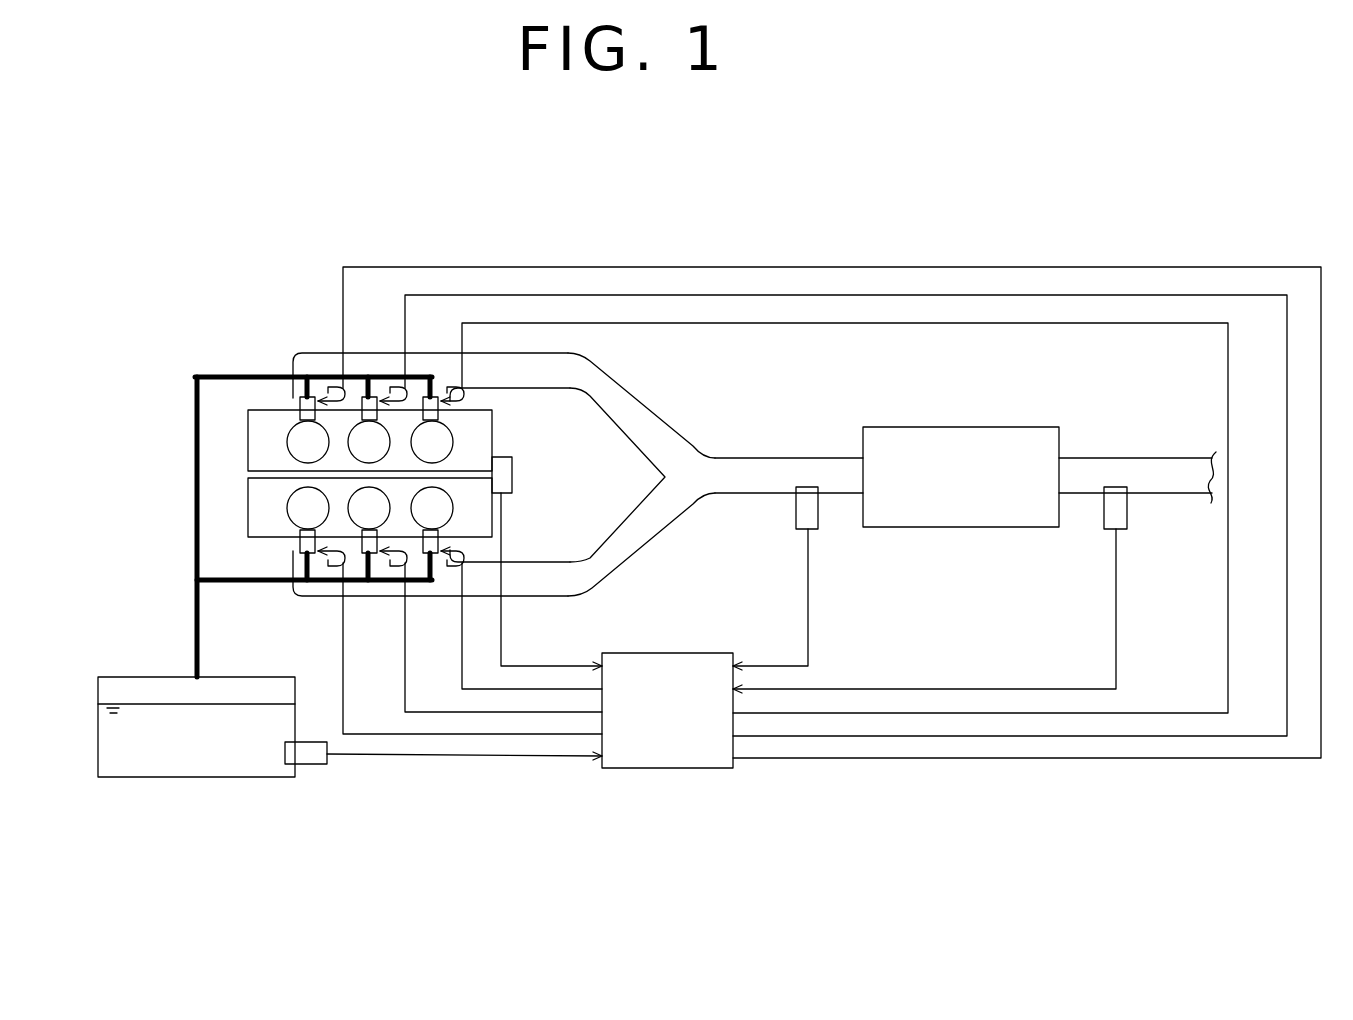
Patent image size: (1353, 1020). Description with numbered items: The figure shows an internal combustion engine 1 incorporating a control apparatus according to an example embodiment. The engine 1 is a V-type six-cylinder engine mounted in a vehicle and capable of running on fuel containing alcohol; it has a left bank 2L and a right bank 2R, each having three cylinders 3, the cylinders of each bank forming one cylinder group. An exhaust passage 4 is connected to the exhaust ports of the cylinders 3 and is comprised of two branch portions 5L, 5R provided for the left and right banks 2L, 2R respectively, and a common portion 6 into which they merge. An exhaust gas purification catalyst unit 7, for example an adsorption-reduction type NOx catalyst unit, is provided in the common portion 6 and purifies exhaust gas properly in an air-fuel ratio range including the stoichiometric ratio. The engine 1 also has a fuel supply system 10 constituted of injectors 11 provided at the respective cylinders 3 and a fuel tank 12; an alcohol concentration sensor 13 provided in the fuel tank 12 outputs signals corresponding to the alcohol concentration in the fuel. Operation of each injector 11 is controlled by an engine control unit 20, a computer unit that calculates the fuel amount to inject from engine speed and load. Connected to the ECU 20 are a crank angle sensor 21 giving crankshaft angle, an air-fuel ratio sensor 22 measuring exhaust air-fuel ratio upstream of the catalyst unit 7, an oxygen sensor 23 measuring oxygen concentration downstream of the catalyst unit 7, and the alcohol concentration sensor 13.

The internal combustion engine 1 is at (615, 233).
The right bank 2R is at (248, 425).
The left bank 2L is at (248, 513).
The cylinder 3 is at (290, 447).
The exhaust passage 4 is at (710, 418).
The branch portion 5R is at (317, 352).
The branch portion 5L is at (297, 597).
The common portion 6 is at (784, 457).
The exhaust gas purification catalyst unit 7 is at (960, 427).
The fuel supply system 10 is at (140, 612).
The injector 11 is at (300, 398).
The fuel tank 12 is at (203, 777).
The alcohol concentration sensor 13 is at (312, 764).
The engine control unit 20 is at (659, 768).
The crank angle sensor 21 is at (513, 470).
The air-fuel ratio sensor 22 is at (795, 518).
The oxygen sensor 23 is at (1127, 515).